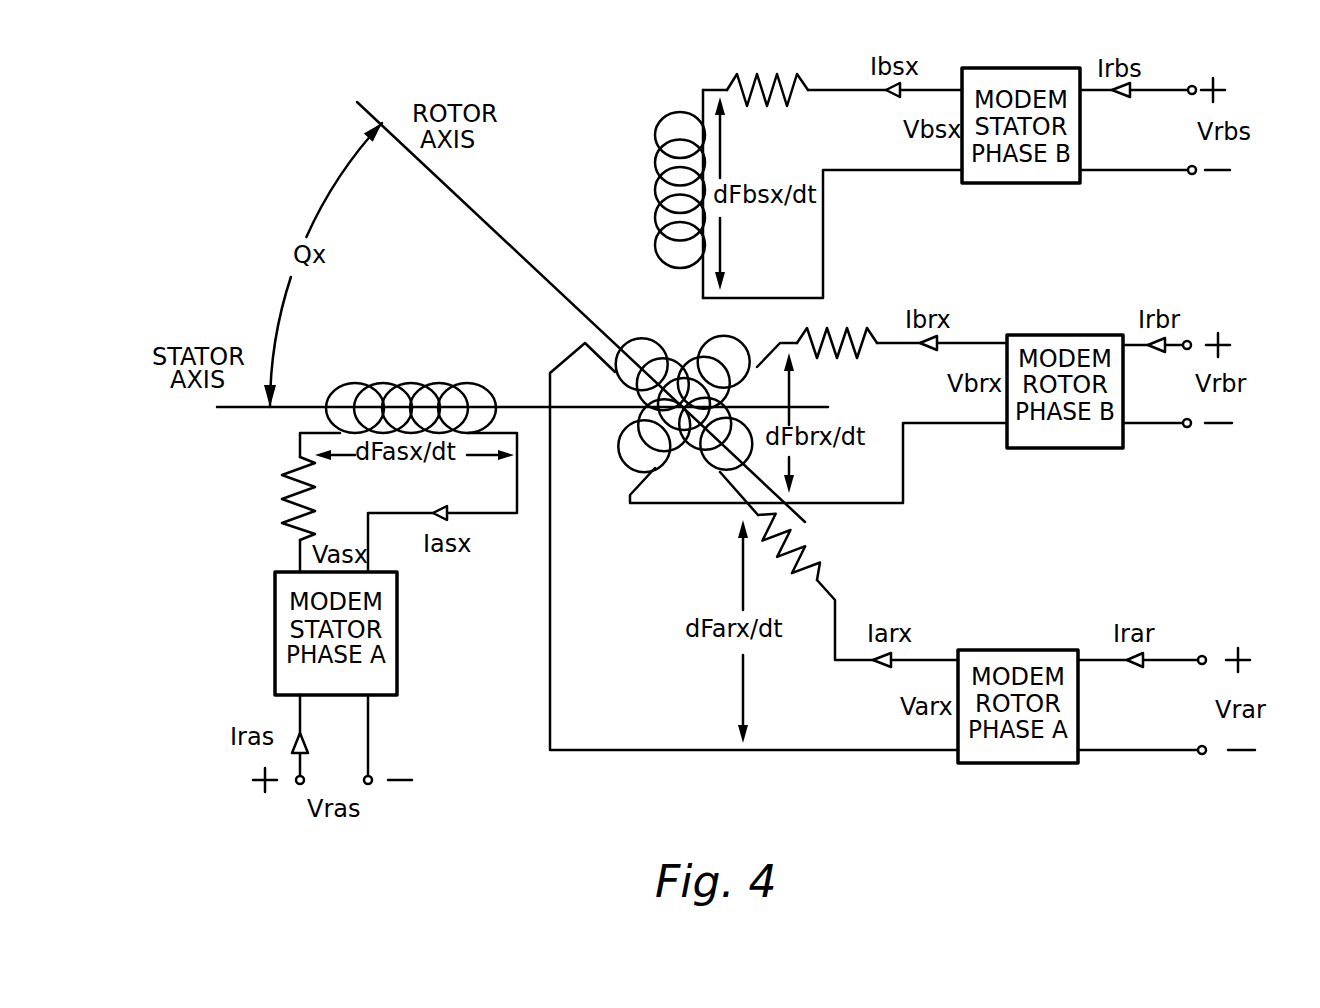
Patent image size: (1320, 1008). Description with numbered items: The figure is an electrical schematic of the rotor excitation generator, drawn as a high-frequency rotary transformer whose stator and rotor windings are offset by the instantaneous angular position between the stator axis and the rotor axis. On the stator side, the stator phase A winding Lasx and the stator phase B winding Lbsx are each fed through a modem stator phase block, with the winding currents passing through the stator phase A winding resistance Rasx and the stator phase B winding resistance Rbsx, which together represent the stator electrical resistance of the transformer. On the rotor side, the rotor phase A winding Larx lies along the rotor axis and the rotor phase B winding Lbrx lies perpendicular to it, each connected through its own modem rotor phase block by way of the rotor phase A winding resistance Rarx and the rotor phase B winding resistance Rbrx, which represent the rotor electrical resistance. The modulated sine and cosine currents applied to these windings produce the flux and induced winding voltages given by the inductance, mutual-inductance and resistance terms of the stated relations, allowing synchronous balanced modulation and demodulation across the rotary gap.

The stator phase A winding resistance Rasx is at (266, 498).
The stator phase B winding resistance Rbsx is at (767, 107).
The rotor phase A winding resistance Rarx is at (816, 547).
The rotor phase B winding resistance Rbrx is at (837, 360).
The stator phase A winding Lasx is at (411, 408).
The stator phase B winding Lbsx is at (680, 194).
The rotor phase A winding Larx is at (684, 403).
The rotor phase B winding Lbrx is at (683, 404).